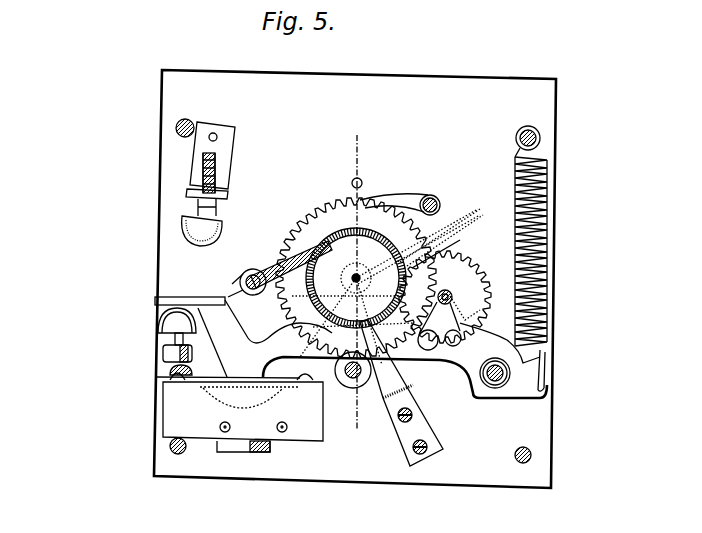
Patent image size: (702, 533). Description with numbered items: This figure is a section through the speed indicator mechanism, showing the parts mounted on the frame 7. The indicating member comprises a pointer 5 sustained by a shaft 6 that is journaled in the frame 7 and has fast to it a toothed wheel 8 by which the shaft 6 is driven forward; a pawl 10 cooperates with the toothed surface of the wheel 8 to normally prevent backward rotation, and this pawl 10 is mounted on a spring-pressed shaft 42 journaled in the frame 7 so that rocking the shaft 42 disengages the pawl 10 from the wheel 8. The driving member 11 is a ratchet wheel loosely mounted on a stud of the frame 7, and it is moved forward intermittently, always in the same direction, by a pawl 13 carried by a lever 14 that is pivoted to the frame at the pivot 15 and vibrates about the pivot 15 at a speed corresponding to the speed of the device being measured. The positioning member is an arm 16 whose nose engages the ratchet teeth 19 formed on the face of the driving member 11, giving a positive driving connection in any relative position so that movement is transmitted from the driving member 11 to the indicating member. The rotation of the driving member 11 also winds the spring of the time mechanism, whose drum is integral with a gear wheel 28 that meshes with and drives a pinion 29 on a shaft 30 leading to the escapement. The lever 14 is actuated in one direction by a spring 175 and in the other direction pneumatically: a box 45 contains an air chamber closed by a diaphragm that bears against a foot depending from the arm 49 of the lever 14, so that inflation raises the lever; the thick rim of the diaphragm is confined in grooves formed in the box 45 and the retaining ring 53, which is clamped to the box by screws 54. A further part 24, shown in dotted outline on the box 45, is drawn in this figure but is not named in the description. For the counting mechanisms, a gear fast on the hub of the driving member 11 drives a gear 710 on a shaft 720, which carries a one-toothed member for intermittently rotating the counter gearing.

The pointer 5 is at (447, 218).
The shaft 6 is at (350, 272).
The frame 7 is at (550, 106).
The toothed wheel 8 is at (432, 266).
The pawl 10 is at (287, 233).
The driving member 11 is at (345, 272).
The pawl 13 is at (470, 290).
The lever 14 is at (413, 350).
The pivot 15 is at (493, 390).
The arm 16 is at (275, 302).
The ratchet teeth 19 is at (380, 270).
The slot 24 is at (314, 407).
The gear wheel 28 is at (345, 197).
The pinion 29 is at (343, 382).
The shaft 30 is at (365, 392).
The spring-pressed shaft 42 is at (254, 270).
The box 45 is at (193, 413).
The arm 49 is at (210, 365).
The retaining ring 53 is at (177, 390).
The screws 54 is at (240, 378).
The spring 175 is at (548, 226).
The gear 710 is at (523, 280).
The shaft 720 is at (450, 297).